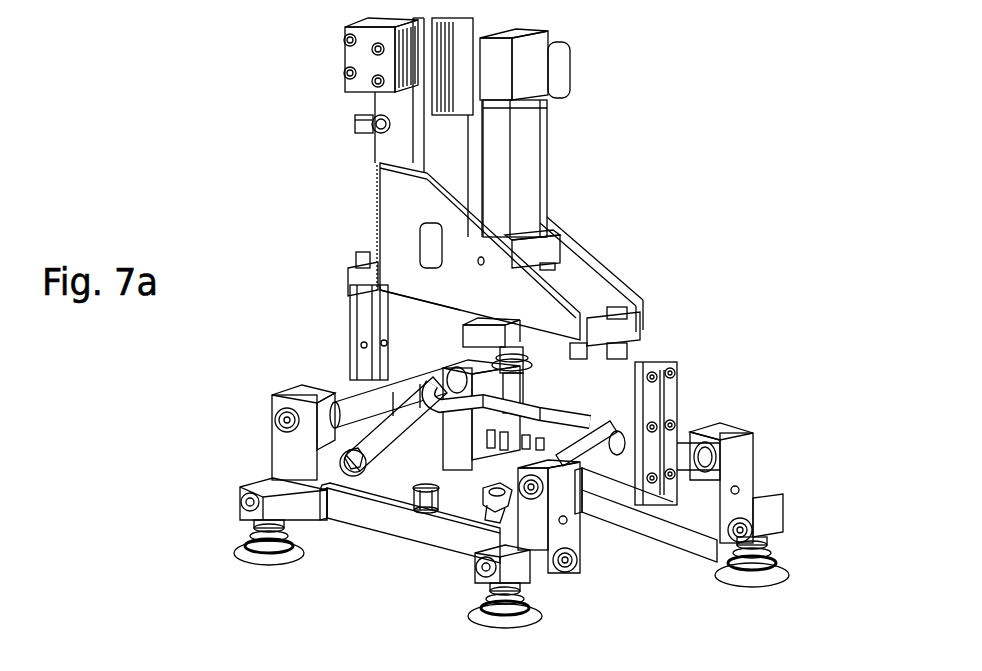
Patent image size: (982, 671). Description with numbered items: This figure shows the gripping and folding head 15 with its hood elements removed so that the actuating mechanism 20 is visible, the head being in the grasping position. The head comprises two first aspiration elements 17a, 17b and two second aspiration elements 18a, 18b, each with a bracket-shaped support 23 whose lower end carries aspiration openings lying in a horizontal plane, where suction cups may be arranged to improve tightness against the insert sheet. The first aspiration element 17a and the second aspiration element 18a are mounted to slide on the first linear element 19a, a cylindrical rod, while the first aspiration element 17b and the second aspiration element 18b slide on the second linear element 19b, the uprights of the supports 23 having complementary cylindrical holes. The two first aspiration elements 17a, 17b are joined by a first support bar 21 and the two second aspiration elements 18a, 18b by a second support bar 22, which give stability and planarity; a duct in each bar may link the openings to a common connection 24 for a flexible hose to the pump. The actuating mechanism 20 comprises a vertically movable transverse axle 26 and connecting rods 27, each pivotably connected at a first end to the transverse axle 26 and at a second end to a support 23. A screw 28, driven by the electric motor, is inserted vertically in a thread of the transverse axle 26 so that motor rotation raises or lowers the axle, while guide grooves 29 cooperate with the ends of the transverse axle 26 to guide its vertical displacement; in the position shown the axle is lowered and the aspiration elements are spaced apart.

The gripping and folding head 15 is at (279, 203).
The first aspiration element 17a is at (493, 530).
The first aspiration element 17b is at (783, 580).
The second aspiration element 18a is at (242, 553).
The second aspiration element 18b is at (540, 627).
The first linear element 19a is at (345, 400).
The second linear element 19b is at (682, 443).
The actuating mechanism 20 is at (588, 386).
The first support bar 21 is at (675, 523).
The second support bar 22 is at (390, 530).
The support 23 is at (278, 457).
The common connection 24 is at (422, 508).
The transverse axle 26 is at (573, 432).
The connecting rod 27 is at (385, 477).
The screw 28 is at (520, 392).
The guide groove 29 is at (372, 325).